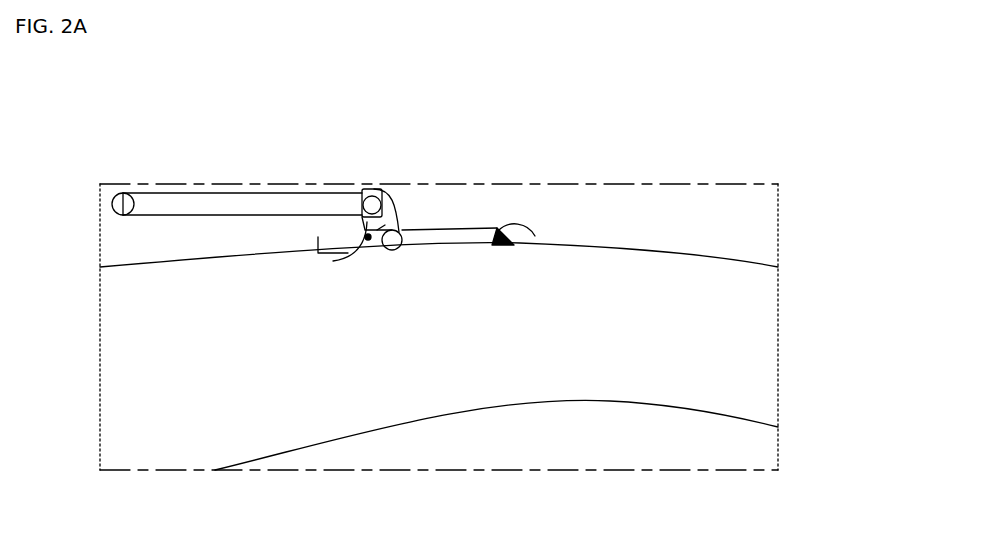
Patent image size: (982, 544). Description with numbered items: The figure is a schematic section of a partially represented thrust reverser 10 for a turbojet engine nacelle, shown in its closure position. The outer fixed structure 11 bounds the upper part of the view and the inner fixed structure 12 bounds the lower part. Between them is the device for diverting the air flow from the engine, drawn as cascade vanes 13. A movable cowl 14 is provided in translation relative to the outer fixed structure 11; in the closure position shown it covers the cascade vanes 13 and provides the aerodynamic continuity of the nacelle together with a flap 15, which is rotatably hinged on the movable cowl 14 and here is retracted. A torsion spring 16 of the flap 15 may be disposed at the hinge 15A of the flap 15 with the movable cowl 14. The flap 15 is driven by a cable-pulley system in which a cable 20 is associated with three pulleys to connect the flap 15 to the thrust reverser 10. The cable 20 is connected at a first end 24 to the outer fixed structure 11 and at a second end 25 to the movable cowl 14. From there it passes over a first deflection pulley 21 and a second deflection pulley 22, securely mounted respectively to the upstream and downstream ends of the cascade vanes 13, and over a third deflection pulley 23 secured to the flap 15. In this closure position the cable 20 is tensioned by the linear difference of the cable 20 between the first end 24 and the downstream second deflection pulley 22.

The thrust reverser 10 is at (168, 152).
The outer fixed structure 11 is at (133, 242).
The inner fixed structure 12 is at (567, 435).
The cascade vanes 13 is at (240, 202).
The movable cowl 14 is at (637, 218).
The flap 15 is at (458, 270).
The hinge 15A is at (514, 250).
The torsion spring 16 is at (513, 260).
The cable 20 is at (397, 227).
The first deflection pulley 21 is at (105, 191).
The second deflection pulley 22 is at (364, 188).
The third deflection pulley 23 is at (393, 253).
The first end 24 is at (366, 215).
The second end 25 is at (368, 240).